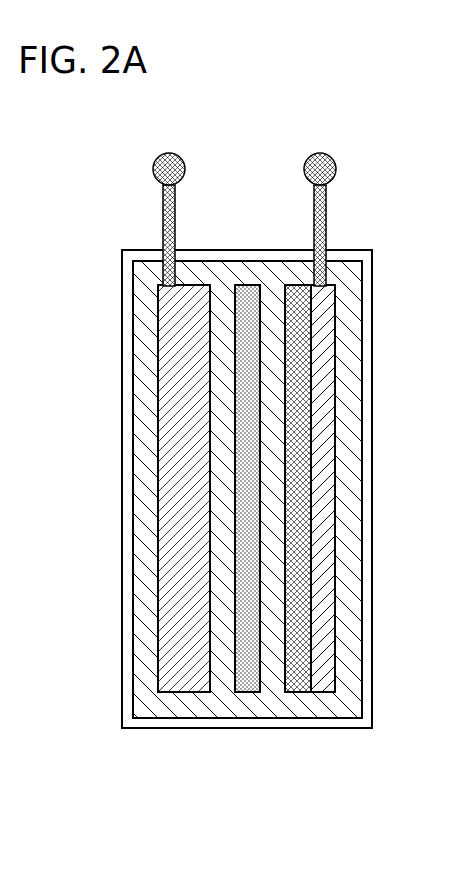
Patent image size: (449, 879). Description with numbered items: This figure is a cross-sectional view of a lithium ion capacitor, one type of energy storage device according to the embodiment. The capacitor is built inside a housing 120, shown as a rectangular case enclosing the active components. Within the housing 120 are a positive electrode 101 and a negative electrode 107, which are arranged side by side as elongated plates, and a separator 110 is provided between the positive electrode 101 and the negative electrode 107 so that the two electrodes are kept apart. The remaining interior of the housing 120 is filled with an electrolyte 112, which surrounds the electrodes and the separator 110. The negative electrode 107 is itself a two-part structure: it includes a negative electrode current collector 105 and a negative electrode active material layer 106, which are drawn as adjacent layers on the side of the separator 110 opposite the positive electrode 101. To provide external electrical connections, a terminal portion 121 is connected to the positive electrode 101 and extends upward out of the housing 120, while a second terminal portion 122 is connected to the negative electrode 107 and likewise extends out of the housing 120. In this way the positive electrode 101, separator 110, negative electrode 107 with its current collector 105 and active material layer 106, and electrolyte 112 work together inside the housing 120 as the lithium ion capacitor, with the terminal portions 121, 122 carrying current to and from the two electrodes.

The positive electrode 101 is at (193, 683).
The negative electrode current collector 105 is at (323, 683).
The negative electrode active material layer 106 is at (297, 683).
The negative electrode 107 is at (315, 561).
The separator 110 is at (255, 262).
The electrolyte 112 is at (350, 278).
The housing 120 is at (368, 373).
The terminal portion 121 is at (168, 153).
The terminal portion 122 is at (320, 153).